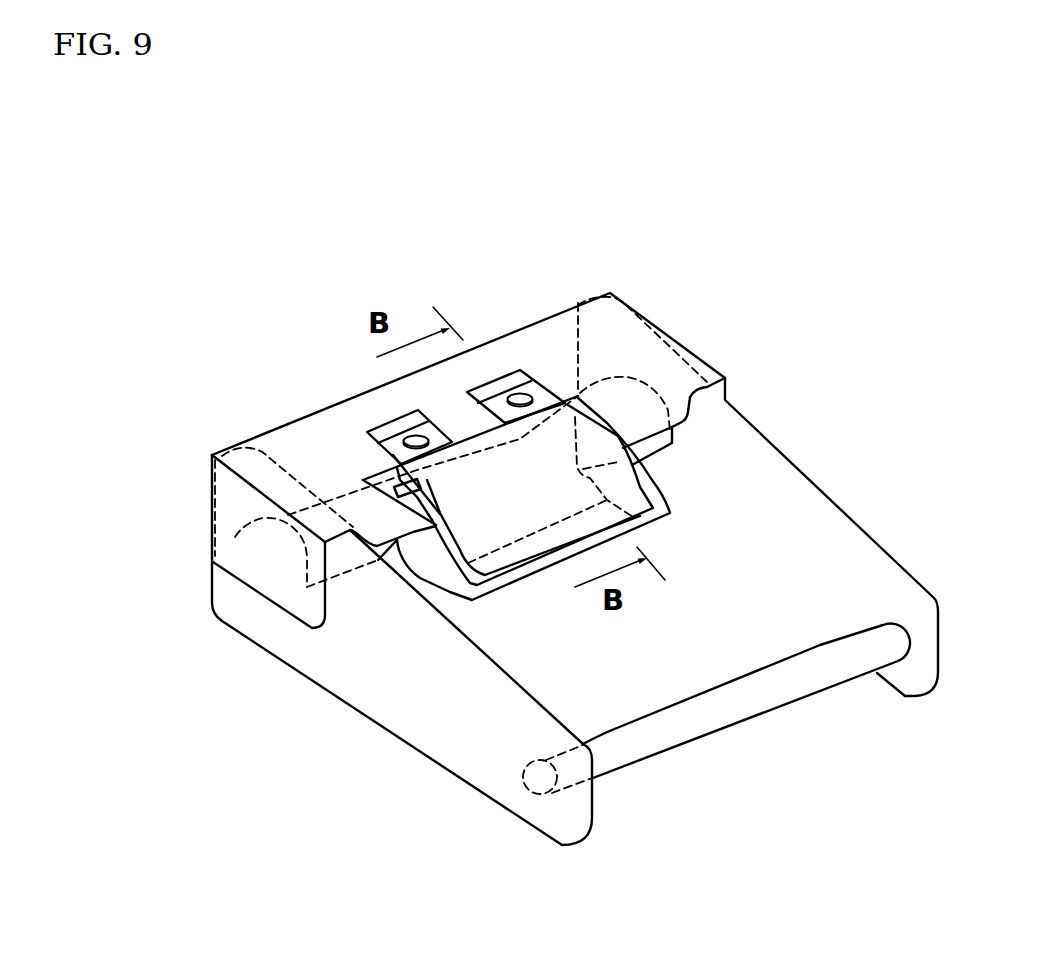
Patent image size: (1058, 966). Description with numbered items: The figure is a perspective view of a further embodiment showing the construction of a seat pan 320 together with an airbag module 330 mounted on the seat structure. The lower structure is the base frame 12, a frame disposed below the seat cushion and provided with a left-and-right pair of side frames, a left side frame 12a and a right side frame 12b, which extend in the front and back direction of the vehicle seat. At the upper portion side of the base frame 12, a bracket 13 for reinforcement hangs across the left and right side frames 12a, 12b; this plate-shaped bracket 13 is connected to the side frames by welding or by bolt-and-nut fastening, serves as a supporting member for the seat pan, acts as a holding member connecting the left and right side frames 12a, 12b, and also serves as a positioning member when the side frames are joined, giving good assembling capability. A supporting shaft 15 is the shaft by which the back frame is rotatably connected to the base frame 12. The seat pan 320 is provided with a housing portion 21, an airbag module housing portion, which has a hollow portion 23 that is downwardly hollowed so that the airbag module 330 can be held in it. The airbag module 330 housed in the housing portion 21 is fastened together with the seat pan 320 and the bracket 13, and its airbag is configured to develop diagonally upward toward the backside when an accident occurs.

The base frame 12 is at (410, 752).
The left side frame 12a is at (350, 675).
The right side frame 12b is at (730, 440).
The bracket 13 is at (345, 503).
The supporting shaft 15 is at (773, 690).
The housing portion 21 is at (404, 486).
The hollow portion 23 is at (386, 430).
The seat pan 320 is at (583, 296).
The airbag module 330 is at (473, 426).